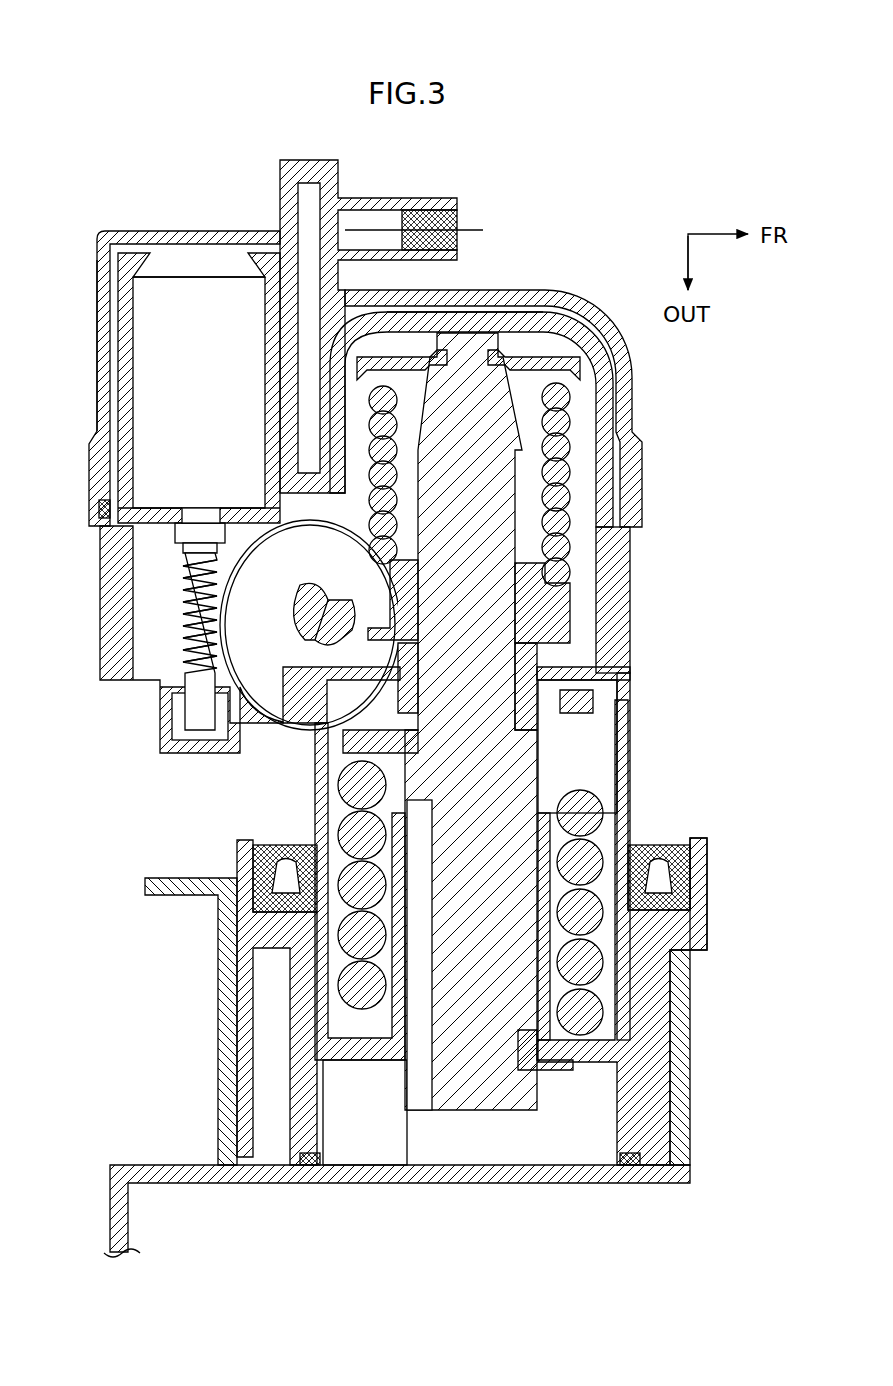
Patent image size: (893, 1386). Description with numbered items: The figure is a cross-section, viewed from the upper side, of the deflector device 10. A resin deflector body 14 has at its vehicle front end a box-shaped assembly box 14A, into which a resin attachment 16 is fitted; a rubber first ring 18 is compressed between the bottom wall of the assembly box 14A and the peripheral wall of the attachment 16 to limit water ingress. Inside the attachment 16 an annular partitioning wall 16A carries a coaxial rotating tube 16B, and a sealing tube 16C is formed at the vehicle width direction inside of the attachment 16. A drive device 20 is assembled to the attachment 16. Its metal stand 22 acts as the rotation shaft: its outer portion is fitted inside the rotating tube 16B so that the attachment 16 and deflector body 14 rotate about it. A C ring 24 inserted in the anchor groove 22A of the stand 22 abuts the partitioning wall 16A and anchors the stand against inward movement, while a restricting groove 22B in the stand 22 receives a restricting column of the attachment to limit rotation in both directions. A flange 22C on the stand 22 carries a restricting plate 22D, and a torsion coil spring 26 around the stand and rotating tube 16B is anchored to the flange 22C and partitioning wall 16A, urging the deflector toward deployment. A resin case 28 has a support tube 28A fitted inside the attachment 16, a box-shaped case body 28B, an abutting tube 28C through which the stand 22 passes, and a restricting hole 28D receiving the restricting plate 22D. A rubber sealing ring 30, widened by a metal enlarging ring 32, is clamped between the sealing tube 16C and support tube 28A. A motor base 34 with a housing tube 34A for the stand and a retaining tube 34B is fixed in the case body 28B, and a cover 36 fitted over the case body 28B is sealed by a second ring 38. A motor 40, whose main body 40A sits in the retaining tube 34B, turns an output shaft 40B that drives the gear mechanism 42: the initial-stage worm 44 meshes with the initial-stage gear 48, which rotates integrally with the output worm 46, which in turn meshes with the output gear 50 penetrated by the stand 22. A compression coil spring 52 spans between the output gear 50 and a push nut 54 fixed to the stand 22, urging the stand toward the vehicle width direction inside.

The deflector device 10 is at (750, 465).
The deflector body 14 is at (128, 1165).
The assembly box 14A is at (218, 1027).
The attachment 16 is at (245, 840).
The partitioning wall 16A is at (372, 1062).
The rotating tube 16B is at (545, 813).
The sealing tube 16C is at (700, 840).
The first ring 18 is at (308, 1168).
The drive device 20 is at (107, 232).
The stand 22 is at (470, 1112).
The anchor groove 22A is at (505, 1075).
The restricting groove 22B is at (438, 1150).
The flange 22C is at (236, 736).
The restricting plate 22D is at (600, 700).
The C ring 24 is at (548, 1071).
The torsion coil spring 26 is at (603, 812).
The case 28 is at (102, 612).
The support tube 28A is at (628, 762).
The case body 28B is at (630, 612).
The abutting tube 28C is at (600, 652).
The restricting hole 28D is at (708, 734).
The sealing ring 30 is at (285, 846).
The enlarging ring 32 is at (690, 885).
The motor base 34 is at (618, 410).
The housing tube 34A is at (500, 312).
The retaining tube 34B is at (105, 330).
The cover 36 is at (612, 300).
The second ring 38 is at (100, 510).
The motor 40 is at (125, 380).
The main body 40A is at (195, 277).
The output shaft 40B is at (180, 518).
The gear mechanism 42 is at (128, 722).
The initial-stage worm 44 is at (205, 632).
The output worm 46 is at (298, 604).
The initial-stage gear 48 is at (242, 750).
The output gear 50 is at (570, 600).
The compression coil spring 52 is at (570, 482).
The push nut 54 is at (578, 366).